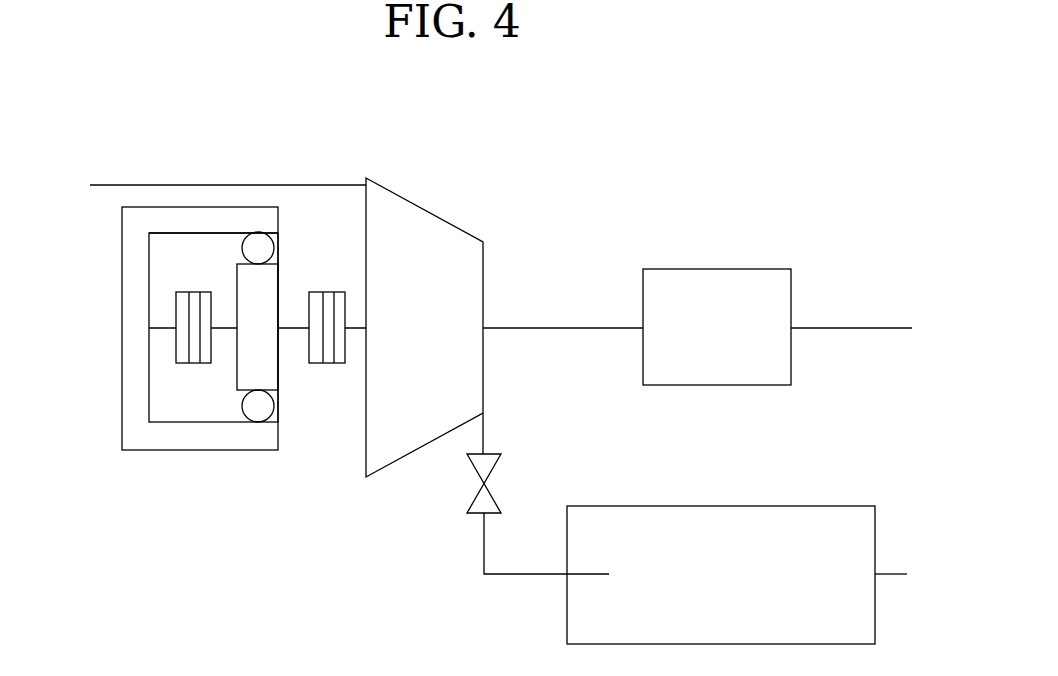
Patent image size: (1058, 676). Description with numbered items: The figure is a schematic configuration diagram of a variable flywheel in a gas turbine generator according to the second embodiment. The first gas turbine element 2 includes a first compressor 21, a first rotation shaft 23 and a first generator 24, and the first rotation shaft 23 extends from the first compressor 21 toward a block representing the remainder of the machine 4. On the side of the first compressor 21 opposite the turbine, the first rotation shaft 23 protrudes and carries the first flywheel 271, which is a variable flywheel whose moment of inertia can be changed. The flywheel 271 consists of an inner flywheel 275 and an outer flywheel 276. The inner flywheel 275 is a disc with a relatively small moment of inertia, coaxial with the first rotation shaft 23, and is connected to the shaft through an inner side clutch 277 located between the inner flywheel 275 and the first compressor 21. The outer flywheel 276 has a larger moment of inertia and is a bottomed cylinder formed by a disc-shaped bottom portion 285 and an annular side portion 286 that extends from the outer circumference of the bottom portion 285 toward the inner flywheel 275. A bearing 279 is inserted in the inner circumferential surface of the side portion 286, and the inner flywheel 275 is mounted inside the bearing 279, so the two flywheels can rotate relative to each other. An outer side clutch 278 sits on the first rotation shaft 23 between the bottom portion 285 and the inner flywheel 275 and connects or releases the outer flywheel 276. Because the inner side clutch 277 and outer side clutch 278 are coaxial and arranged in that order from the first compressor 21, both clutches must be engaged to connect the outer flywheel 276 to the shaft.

The first gas turbine element 2 is at (846, 153).
The engine 4 is at (806, 506).
The first compressor 21 is at (445, 219).
The first rotation shaft 23 is at (580, 326).
The first generator 24 is at (683, 268).
The first flywheel 271 is at (141, 458).
The inner flywheel 275 is at (268, 281).
The outer flywheel 276 is at (137, 368).
The inner side clutch 277 is at (327, 364).
The outer side clutch 278 is at (195, 364).
The bearing 279 is at (257, 247).
The bottom portion 285 is at (133, 292).
The side portion 286 is at (177, 222).